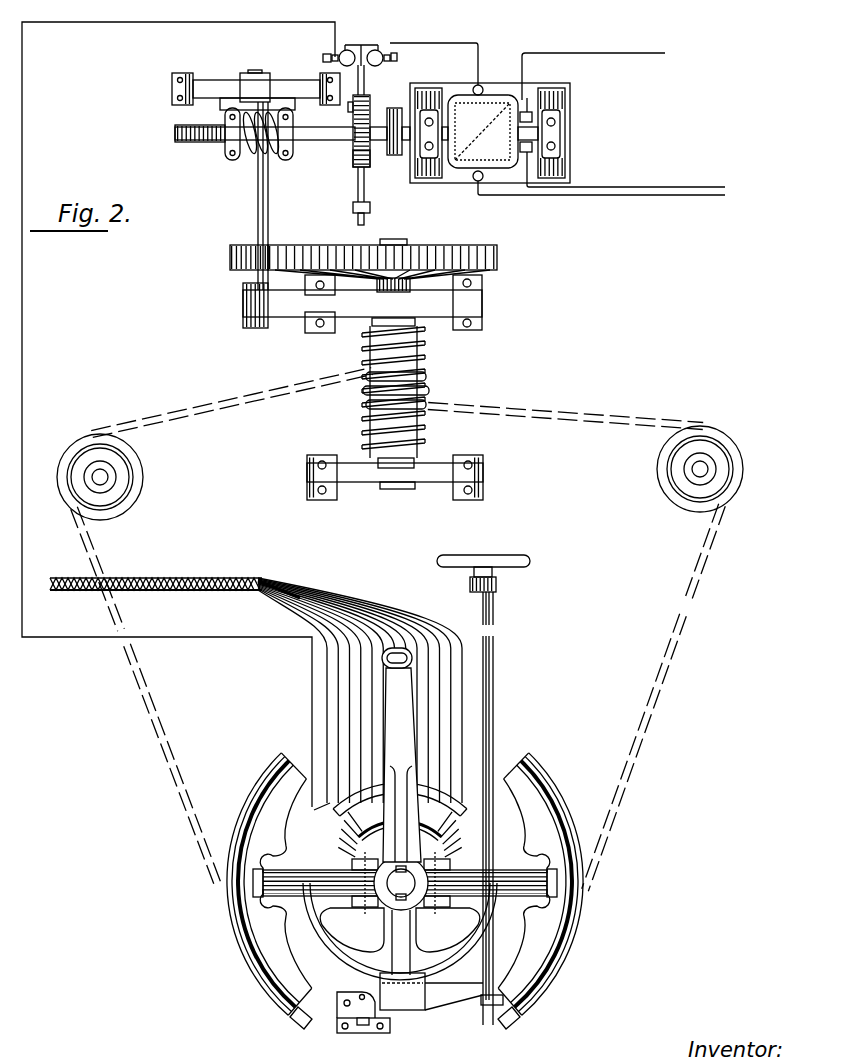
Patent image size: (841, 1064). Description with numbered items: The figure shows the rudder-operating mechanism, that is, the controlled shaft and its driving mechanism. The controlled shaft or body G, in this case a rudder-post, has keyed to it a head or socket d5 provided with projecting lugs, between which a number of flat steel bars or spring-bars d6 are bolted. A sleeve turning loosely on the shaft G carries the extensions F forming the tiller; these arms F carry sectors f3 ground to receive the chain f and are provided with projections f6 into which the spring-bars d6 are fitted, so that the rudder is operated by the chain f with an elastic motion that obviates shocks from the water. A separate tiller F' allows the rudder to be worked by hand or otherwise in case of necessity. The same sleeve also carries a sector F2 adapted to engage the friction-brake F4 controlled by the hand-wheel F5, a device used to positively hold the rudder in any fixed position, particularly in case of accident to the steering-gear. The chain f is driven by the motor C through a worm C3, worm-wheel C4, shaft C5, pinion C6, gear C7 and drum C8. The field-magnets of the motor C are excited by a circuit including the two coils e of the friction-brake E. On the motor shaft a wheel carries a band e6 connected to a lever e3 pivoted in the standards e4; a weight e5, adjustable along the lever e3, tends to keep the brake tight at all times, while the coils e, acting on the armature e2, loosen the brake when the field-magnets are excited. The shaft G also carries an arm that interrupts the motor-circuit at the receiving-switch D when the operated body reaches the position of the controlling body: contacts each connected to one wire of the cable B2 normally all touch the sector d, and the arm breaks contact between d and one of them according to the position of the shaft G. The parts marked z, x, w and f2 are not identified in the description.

The circuit wires z is at (373, 416).
The circuit wire x is at (593, 68).
The circuit wire w is at (626, 170).
The friction-brake E is at (360, 44).
The coils e is at (361, 58).
The armature e2 is at (366, 80).
The standards e4 is at (371, 104).
The band e6 is at (354, 165).
The lever e3 is at (365, 182).
The weight e5 is at (371, 208).
The motor C is at (490, 130).
The worm-wheel C4 is at (200, 142).
The worm C3 is at (250, 160).
The shaft C5 is at (268, 236).
The pinion C6 is at (230, 262).
The gear C7 is at (432, 250).
The drum C8 is at (425, 349).
The chain f is at (233, 410).
The guide pulley f2 is at (140, 477).
The sectors f3 is at (560, 766).
The projections f6 is at (596, 918).
The extensions forming the tiller F is at (399, 842).
The tiller F' is at (401, 755).
The hand-wheel F5 is at (531, 562).
The sector F2 is at (448, 965).
The friction-brake F4 is at (406, 1012).
The cable B2 is at (256, 684).
The receiving-switch D is at (400, 896).
The sector d is at (465, 808).
The spring-bars d6 is at (487, 895).
The head or socket d5 is at (463, 905).
The controlled shaft G is at (401, 883).